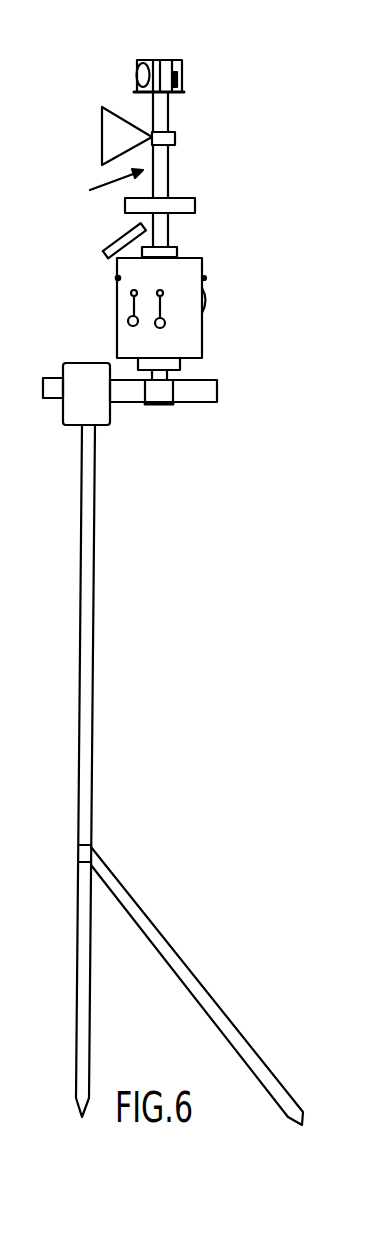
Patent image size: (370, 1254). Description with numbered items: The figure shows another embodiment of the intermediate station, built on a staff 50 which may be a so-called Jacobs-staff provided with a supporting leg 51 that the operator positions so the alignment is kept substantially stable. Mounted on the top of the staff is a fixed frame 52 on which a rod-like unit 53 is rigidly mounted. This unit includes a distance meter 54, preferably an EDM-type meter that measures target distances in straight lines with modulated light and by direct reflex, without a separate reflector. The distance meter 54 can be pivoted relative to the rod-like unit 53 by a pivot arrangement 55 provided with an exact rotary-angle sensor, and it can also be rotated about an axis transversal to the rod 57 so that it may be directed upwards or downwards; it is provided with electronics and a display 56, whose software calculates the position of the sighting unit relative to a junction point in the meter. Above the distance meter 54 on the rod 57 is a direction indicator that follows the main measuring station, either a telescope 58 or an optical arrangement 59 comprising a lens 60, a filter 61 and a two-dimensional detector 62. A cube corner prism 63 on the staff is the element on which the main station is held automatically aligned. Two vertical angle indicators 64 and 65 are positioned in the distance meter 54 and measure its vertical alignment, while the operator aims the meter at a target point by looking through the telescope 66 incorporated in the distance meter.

The staff 50 is at (91, 697).
The supporting leg 51 is at (199, 983).
The fixed frame 52 is at (195, 402).
The rod-like unit 53 is at (99, 188).
The distance meter 54 is at (199, 326).
The pivot arrangement 55 is at (177, 250).
The display 56 is at (109, 243).
The rod 57 is at (169, 172).
The telescope 58 is at (195, 207).
The optical arrangement 59 is at (184, 92).
The lens 60 is at (143, 61).
The filter 61 is at (160, 60).
The two-dimensional detector 62 is at (184, 63).
The cube corner prism 63 is at (102, 117).
The vertical angle indicator 64 is at (130, 300).
The vertical angle indicator 65 is at (154, 327).
The telescope 66 is at (116, 278).